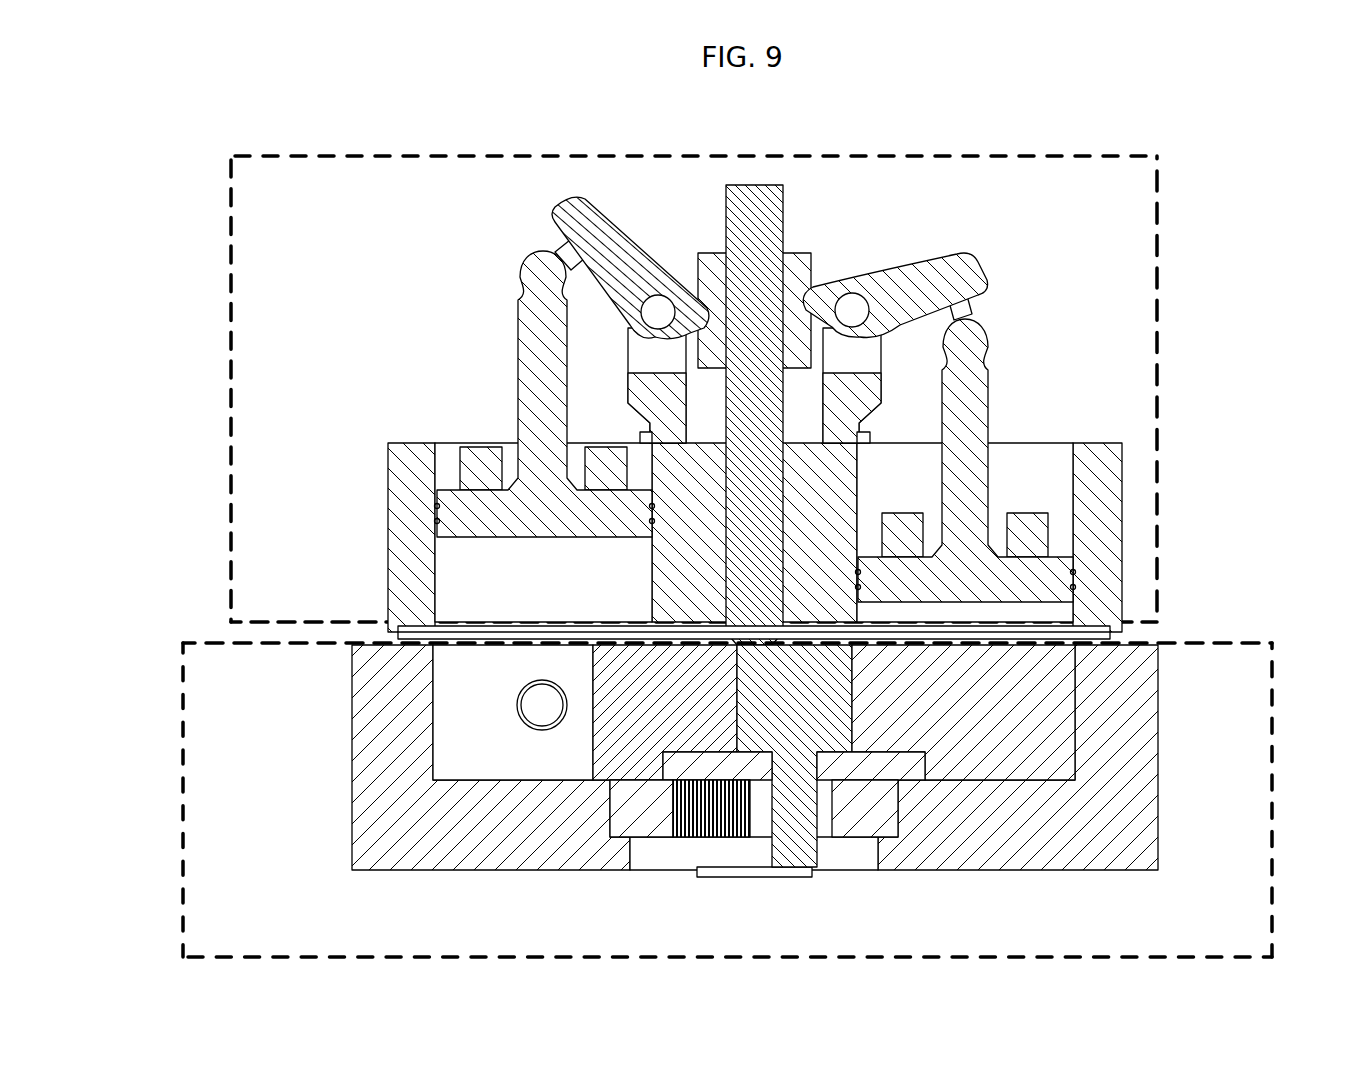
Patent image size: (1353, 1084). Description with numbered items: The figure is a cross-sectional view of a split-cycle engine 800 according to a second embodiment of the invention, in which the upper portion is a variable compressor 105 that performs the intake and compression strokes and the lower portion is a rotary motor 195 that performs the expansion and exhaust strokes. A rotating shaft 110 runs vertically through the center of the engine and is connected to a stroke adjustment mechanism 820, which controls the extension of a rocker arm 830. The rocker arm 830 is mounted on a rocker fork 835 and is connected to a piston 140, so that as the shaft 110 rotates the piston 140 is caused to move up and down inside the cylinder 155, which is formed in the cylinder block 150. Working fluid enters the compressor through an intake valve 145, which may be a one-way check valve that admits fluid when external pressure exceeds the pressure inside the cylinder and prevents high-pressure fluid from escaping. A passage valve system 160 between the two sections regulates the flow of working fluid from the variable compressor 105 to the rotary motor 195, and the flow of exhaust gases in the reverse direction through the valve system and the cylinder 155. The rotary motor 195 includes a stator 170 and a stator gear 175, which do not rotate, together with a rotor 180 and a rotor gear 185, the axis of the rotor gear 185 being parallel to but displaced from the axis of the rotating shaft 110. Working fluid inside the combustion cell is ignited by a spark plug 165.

The variable compressor 105 is at (228, 168).
The split-cycle engine 800 is at (510, 128).
The rotating shaft 110 is at (783, 186).
The stroke adjustment mechanism 820 is at (700, 252).
The rocker arm 830 is at (960, 254).
The rocker fork 835 is at (627, 350).
The piston 140 is at (517, 373).
The intake valve 145 is at (1020, 503).
The cylinder block 150 is at (388, 492).
The cylinder 155 is at (450, 588).
The passage valve system 160 is at (1000, 633).
The rotary motor 195 is at (182, 663).
The stator 170 is at (1138, 730).
The stator gear 175 is at (888, 813).
The rotor 180 is at (587, 748).
The rotor gear 185 is at (657, 763).
The spark plug 165 is at (510, 717).